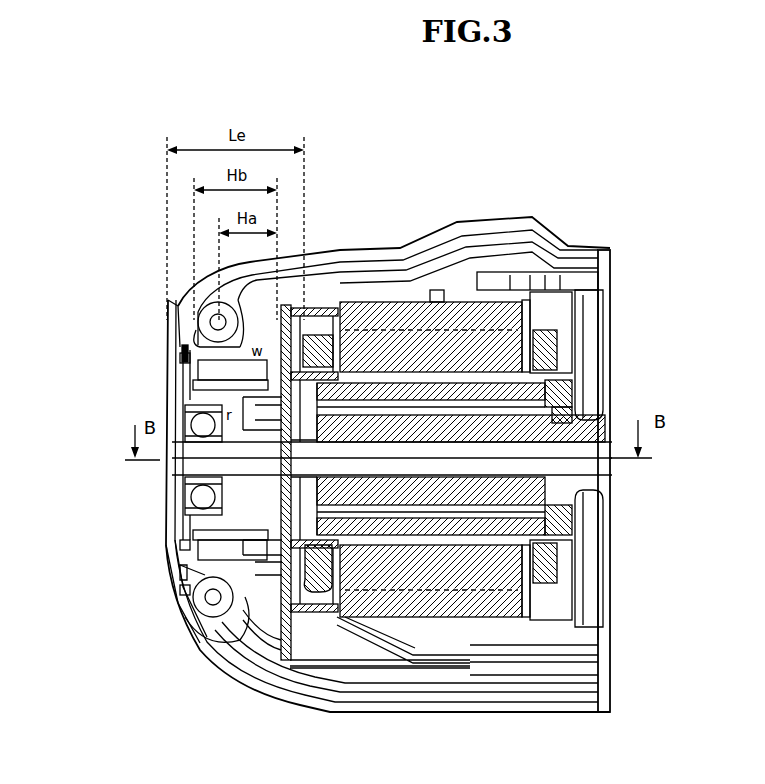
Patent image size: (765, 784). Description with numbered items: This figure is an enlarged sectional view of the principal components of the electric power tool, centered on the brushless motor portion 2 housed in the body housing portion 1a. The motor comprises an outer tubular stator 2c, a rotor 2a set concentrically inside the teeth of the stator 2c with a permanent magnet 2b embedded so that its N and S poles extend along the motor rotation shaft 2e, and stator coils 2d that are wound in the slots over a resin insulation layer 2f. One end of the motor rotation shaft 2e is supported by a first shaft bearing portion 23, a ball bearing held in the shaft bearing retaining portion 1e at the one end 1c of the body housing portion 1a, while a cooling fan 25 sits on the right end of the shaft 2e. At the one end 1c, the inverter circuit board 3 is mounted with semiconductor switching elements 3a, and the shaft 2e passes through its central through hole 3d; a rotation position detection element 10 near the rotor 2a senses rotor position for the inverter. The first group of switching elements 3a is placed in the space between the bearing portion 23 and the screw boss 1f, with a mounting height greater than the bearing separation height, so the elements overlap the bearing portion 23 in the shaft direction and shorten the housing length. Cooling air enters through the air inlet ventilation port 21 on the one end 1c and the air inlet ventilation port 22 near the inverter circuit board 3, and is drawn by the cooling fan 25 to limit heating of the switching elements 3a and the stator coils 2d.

The body housing portion 1a is at (265, 688).
The one end of the body housing portion 1c is at (175, 602).
The shaft bearing retaining portion 1e is at (172, 390).
The screw boss 1f is at (172, 300).
The brushless motor portion 2 is at (597, 178).
The rotor 2a is at (355, 428).
The permanent magnet 2b is at (407, 407).
The stator 2c is at (468, 345).
The stator coils 2d is at (560, 330).
The motor rotation shaft 2e is at (608, 450).
The insulation layer 2f is at (524, 305).
The inverter circuit board 3 is at (262, 600).
The semiconductor switching elements 3a is at (185, 352).
The through hole 3d is at (338, 600).
The rotation position detection element 10 is at (303, 600).
The air inlet ventilation port 21 is at (167, 537).
The air inlet ventilation port 22 is at (222, 612).
The first shaft bearing portion 23 is at (167, 413).
The cooling fan 25 is at (596, 305).